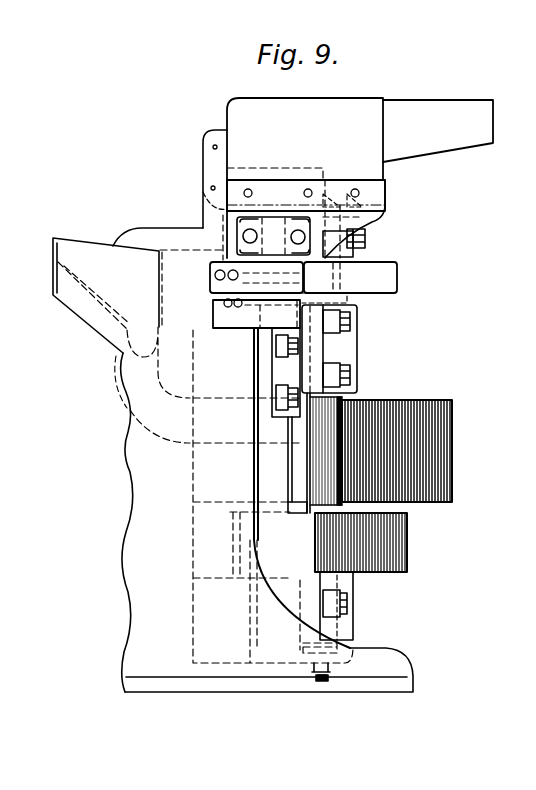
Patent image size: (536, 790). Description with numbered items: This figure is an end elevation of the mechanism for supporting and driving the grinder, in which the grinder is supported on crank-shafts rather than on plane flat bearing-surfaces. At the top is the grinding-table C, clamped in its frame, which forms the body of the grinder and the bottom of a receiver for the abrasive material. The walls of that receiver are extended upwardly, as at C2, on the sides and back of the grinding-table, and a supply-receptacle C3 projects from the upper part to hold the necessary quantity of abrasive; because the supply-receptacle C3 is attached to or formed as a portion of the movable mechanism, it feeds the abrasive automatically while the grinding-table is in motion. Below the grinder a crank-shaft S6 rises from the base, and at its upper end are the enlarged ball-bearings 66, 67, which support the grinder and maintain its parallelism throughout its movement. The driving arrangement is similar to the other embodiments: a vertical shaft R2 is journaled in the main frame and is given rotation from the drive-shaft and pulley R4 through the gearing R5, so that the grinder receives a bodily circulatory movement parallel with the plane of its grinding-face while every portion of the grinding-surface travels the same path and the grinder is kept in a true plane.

The grinding-table C is at (250, 170).
The upwardly extended walls of the receptacle C2 is at (305, 178).
The supply-receptacle C3 is at (438, 131).
The ball-bearing 66 is at (215, 276).
The ball-bearing 67 is at (213, 308).
The crank-shaft S6 is at (302, 488).
The vertical shaft R2 is at (340, 508).
The drive-shaft and pulley R4 is at (440, 452).
The gearing R5 is at (407, 548).